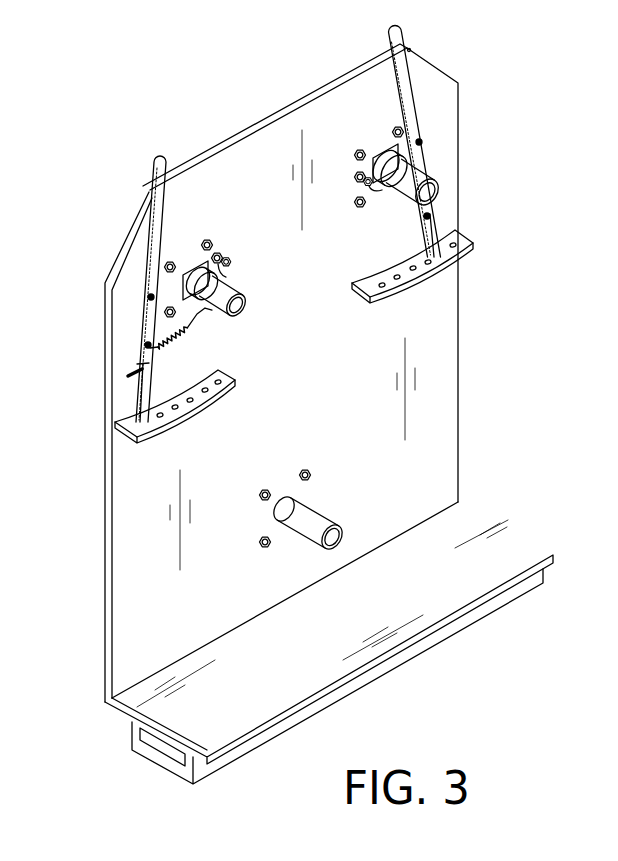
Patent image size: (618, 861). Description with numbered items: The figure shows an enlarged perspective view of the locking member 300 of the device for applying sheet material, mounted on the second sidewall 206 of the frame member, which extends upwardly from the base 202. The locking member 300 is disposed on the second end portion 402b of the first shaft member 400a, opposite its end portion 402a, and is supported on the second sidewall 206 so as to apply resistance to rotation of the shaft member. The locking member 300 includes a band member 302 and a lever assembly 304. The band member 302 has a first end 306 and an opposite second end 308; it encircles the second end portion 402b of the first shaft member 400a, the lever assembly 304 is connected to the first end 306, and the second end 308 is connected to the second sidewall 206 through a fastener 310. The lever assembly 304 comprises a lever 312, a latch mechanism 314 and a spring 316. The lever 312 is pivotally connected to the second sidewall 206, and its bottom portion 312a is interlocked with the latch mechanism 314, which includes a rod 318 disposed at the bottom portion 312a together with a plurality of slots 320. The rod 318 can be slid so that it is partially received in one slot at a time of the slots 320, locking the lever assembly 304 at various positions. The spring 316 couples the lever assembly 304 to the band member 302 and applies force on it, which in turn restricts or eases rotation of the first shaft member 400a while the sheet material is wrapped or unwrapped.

The base 202 is at (522, 548).
The second sidewall 206 is at (437, 405).
The locking member 300 is at (92, 195).
The band member 302 is at (195, 277).
The lever assembly 304 is at (145, 270).
The first end 306 is at (214, 316).
The second end 308 is at (224, 278).
The fastener 310 is at (220, 252).
The lever 312 is at (160, 156).
The bottom portion 312a is at (151, 318).
The latch mechanism 314 is at (120, 411).
The spring 316 is at (188, 330).
The rod 318 is at (140, 368).
The plurality of slots 320 is at (192, 402).
The first shaft member 400a is at (233, 290).
The first end portion of the first shaft member 402a is at (430, 192).
The second end portion of the first shaft member 402b is at (252, 312).